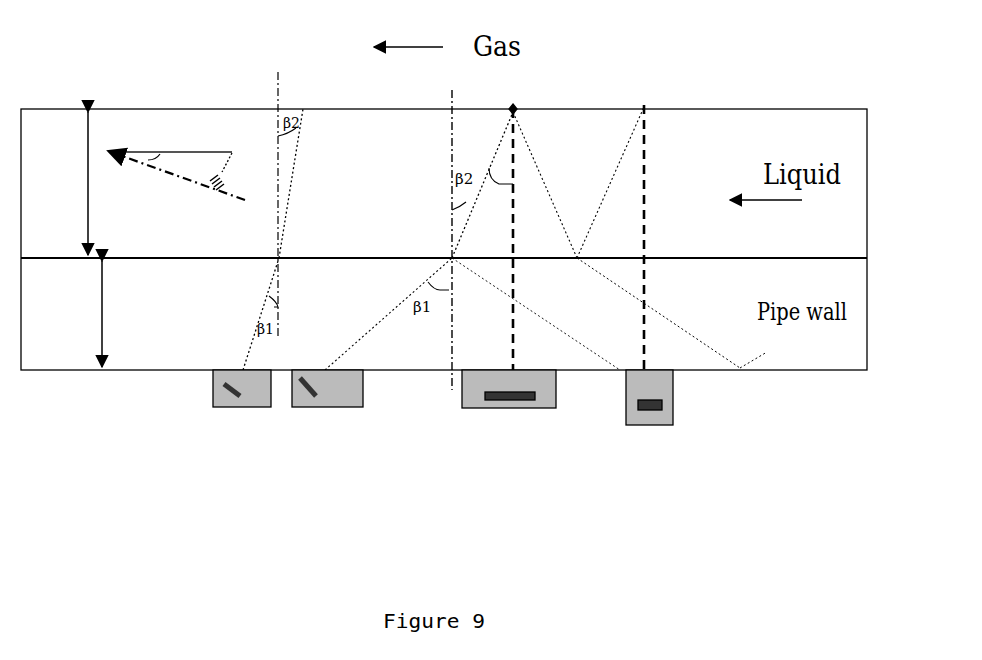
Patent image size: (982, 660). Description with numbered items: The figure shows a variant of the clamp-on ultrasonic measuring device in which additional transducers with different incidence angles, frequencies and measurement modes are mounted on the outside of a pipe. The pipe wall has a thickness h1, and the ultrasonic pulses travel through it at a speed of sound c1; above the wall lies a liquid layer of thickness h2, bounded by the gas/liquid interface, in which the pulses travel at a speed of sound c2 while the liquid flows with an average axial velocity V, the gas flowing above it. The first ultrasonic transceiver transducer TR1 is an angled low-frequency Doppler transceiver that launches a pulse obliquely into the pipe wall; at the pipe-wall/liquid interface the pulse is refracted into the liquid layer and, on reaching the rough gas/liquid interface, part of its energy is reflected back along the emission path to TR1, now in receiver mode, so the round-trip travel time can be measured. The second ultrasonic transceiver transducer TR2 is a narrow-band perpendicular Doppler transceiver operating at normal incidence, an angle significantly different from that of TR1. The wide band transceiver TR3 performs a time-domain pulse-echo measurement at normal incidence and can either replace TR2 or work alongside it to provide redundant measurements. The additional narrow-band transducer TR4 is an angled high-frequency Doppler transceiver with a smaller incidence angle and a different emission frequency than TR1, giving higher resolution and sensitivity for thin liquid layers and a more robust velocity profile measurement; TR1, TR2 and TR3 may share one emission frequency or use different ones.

The first ultrasonic transceiver transducer TR1 is at (317, 409).
The second ultrasonic transceiver transducer TR2 is at (488, 409).
The wide band transceiver TR3 is at (638, 426).
The additional narrow-band transducer TR4 is at (232, 410).
The pipe wall thickness h1 is at (80, 314).
The liquid layer thickness h2 is at (65, 183).
The speed of sound in pipe wall c1 is at (321, 302).
The speed of sound in liquid layer c2 is at (416, 172).
The average axial velocity V is at (176, 160).